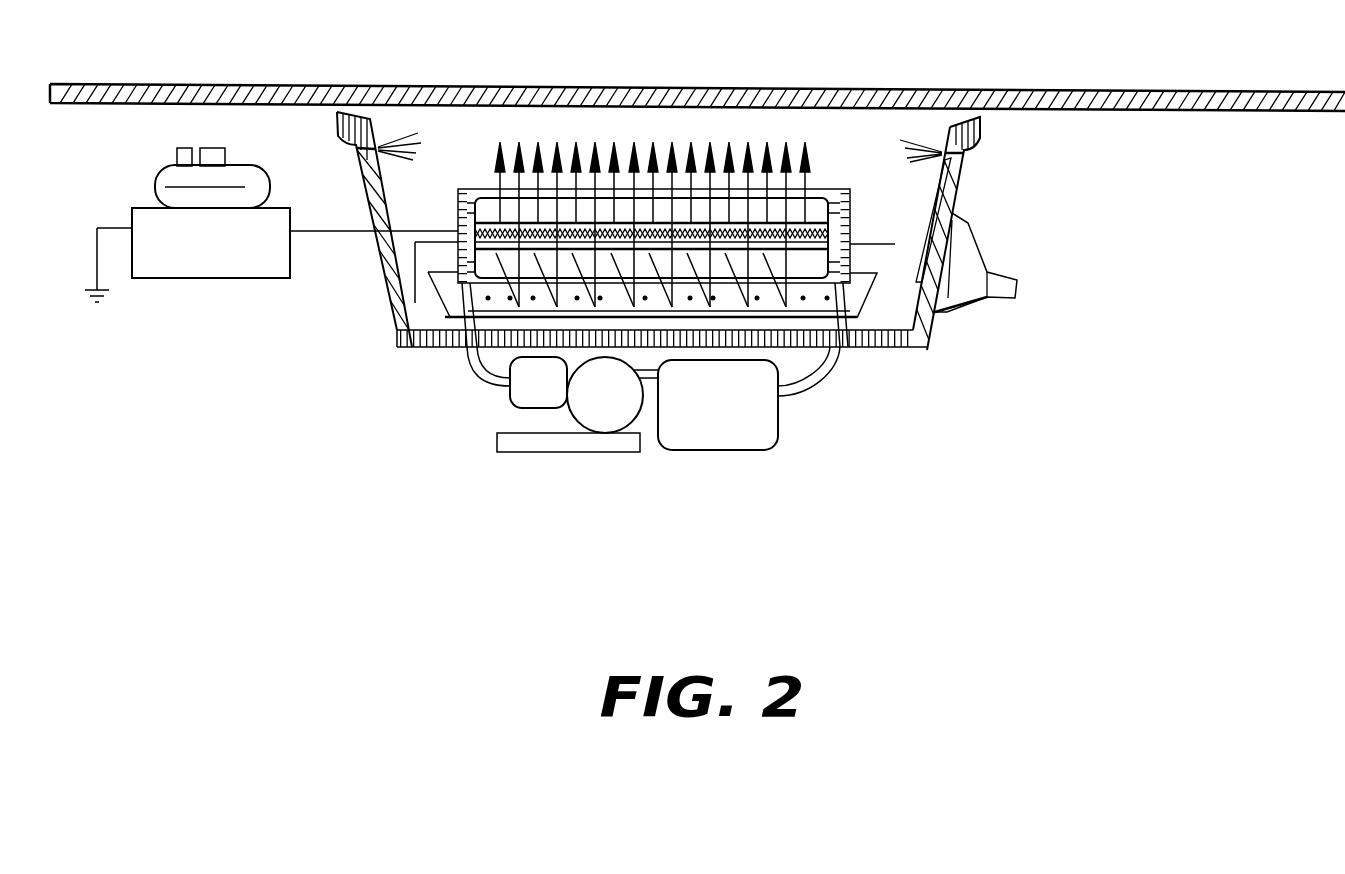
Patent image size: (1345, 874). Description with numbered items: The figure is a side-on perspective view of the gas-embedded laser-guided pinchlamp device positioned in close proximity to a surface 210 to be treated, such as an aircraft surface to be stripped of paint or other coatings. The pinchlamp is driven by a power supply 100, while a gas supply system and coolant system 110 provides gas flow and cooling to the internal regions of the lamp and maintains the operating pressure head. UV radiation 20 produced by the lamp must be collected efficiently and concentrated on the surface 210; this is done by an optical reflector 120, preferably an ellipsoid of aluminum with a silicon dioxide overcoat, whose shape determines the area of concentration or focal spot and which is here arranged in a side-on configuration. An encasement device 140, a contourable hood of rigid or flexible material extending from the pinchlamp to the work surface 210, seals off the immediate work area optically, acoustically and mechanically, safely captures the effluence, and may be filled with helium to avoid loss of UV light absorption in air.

The UV radiation 20 is at (622, 160).
The surface 210 is at (912, 89).
The power supply 100 is at (237, 279).
The gas supply system and coolant system 110 is at (755, 438).
The optical reflector 120 is at (450, 290).
The encasement device 140 is at (930, 342).